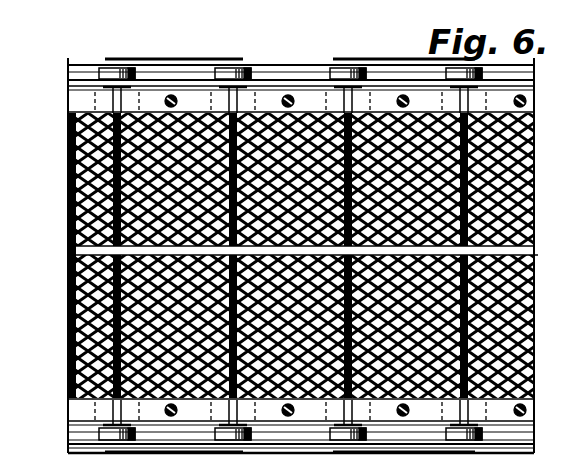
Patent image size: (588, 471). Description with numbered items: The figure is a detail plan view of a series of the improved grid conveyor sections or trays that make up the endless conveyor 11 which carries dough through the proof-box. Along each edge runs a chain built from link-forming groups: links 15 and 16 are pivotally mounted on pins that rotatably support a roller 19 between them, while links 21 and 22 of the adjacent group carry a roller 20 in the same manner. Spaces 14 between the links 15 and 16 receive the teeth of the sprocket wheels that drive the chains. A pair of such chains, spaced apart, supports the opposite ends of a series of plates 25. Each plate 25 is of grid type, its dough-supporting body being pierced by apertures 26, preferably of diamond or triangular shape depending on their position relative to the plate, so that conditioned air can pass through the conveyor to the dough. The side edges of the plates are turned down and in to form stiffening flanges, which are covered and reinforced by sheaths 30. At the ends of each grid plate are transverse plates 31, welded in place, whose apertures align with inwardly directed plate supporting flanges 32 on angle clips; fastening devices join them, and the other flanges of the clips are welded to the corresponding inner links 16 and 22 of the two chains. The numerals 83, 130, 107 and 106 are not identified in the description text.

The conveyor 11 is at (60, 78).
The top rail 83 is at (60, 79).
The upper mesh section 130 is at (60, 117).
The central strip 107 is at (60, 248).
The apertures 26 is at (80, 305).
The plates 25 is at (64, 334).
The sheaths 30 is at (64, 370).
The bottom rail 106 is at (60, 411).
The transverse plates 31 is at (127, 398).
The spaces 14 is at (182, 434).
The links 15 is at (133, 428).
The roller 20 is at (215, 434).
The links 21 is at (265, 440).
The links 22 is at (284, 438).
The roller 19 is at (322, 440).
The links 16 is at (413, 426).
The plate supporting flanges 32 is at (494, 420).